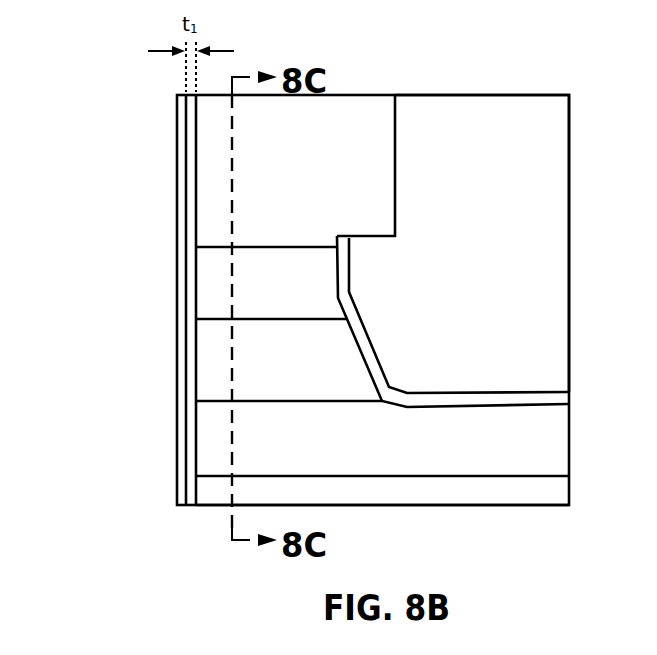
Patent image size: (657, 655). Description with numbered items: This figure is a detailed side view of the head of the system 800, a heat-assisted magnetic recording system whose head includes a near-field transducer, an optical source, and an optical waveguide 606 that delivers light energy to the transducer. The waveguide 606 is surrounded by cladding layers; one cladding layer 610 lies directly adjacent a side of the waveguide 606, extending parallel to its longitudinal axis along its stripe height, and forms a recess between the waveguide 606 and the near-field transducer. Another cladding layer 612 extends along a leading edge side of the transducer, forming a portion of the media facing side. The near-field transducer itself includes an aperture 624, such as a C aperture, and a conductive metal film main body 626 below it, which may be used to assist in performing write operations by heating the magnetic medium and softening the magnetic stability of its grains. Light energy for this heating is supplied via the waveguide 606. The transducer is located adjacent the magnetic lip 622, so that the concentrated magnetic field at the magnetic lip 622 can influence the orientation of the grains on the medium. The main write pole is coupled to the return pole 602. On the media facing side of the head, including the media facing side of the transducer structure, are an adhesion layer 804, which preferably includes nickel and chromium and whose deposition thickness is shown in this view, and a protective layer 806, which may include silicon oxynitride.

The system 800 is at (83, 69).
The protective layer 806 is at (177, 342).
The adhesion layer 804 is at (186, 429).
The magnetic lip 622 is at (276, 168).
The aperture 624 is at (265, 296).
The main body 626 is at (265, 371).
The optical waveguide 606 is at (463, 278).
The cladding layer 610 is at (569, 399).
The cladding layer 612 is at (338, 452).
The return pole 602 is at (367, 500).